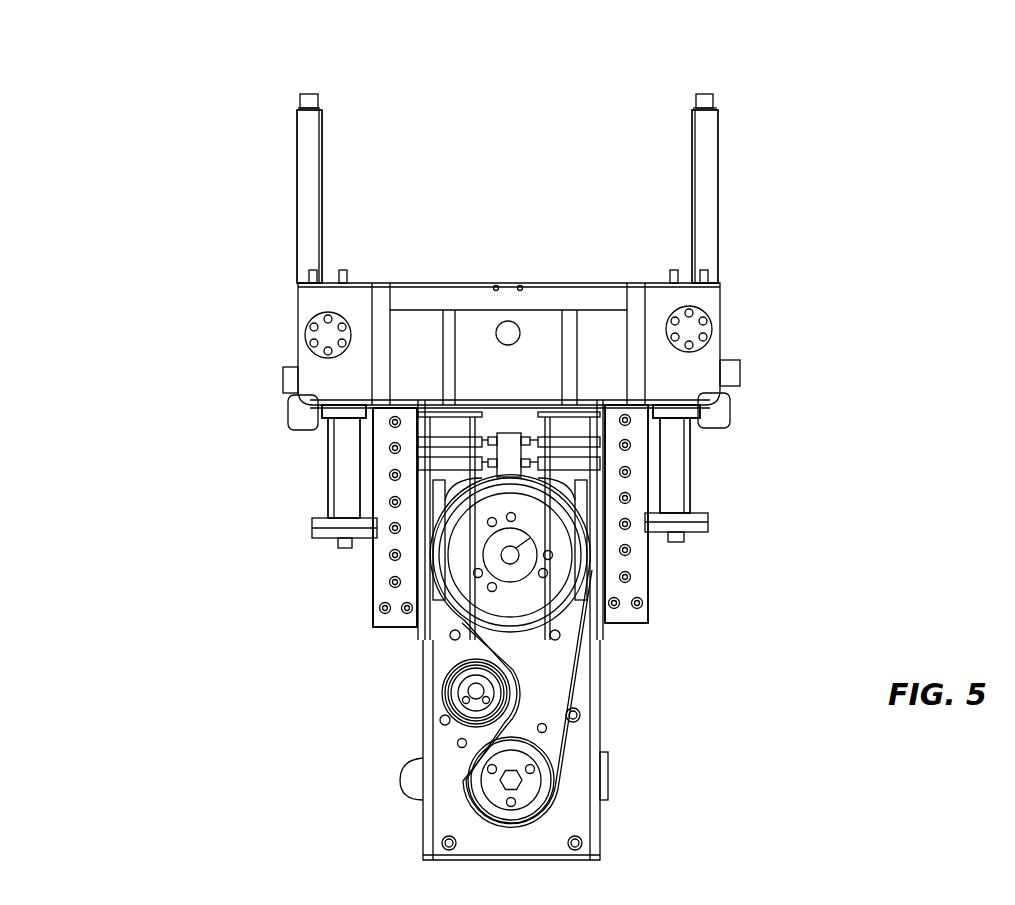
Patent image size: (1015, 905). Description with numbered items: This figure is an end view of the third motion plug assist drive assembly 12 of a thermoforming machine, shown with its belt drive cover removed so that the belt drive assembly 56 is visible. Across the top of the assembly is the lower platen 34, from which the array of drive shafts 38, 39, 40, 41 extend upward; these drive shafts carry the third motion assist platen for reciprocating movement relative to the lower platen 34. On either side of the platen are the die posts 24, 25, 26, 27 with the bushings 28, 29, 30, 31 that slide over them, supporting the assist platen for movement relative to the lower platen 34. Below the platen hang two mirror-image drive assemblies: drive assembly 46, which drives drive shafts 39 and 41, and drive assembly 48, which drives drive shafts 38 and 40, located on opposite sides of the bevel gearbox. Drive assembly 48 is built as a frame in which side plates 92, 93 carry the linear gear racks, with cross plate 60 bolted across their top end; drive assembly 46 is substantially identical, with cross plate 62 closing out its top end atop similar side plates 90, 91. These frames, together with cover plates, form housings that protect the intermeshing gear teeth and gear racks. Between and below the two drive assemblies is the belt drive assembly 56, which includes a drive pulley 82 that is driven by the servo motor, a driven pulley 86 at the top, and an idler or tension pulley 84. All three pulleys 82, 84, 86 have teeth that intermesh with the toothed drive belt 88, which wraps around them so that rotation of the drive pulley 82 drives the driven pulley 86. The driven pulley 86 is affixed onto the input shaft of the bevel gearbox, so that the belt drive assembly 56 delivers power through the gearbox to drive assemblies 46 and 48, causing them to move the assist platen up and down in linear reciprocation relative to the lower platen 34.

The third motion plug assist drive assembly 12 is at (908, 158).
The die post 24 is at (675, 465).
The die post 25 is at (678, 482).
The die post 26 is at (344, 468).
The die post 27 is at (342, 487).
The bushing 28 is at (676, 411).
The bushing 29 is at (670, 405).
The bushing 30 is at (344, 411).
The bushing 31 is at (348, 408).
The lower platen 34 is at (442, 283).
The drive shaft 38 is at (309, 196).
The drive shaft 39 is at (705, 196).
The drive shaft 40 is at (297, 205).
The drive shaft 41 is at (718, 205).
The drive assembly 46 is at (652, 633).
The drive assembly 48 is at (372, 634).
The belt drive assembly 56 is at (612, 750).
The cross plate 60 is at (287, 388).
The cross plate 62 is at (733, 388).
The drive pulley 82 is at (532, 803).
The idler pulley 84 is at (455, 723).
The driven pulley 86 is at (475, 603).
The toothed drive belt 88 is at (583, 680).
The side plate 90 is at (638, 568).
The side plate 91 is at (626, 514).
The side plate 92 is at (387, 568).
The side plate 93 is at (395, 517).